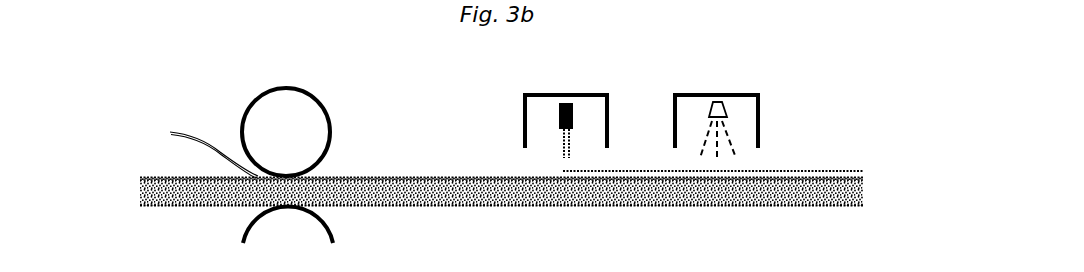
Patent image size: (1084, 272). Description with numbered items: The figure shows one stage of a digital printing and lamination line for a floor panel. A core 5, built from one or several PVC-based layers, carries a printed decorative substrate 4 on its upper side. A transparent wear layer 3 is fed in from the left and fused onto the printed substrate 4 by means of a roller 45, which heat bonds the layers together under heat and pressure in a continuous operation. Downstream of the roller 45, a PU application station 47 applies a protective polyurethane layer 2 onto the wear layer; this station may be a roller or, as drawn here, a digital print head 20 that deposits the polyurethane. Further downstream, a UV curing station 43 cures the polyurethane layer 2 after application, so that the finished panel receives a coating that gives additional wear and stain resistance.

The polyurethane layer 2 is at (833, 170).
The transparent wear layer 3 is at (170, 132).
The substrate 4 is at (158, 177).
The core 5 is at (140, 184).
The digital print head 20 is at (573, 118).
The UV curing station 43 is at (720, 95).
The roller 45 is at (308, 112).
The PU application station 47 is at (587, 95).